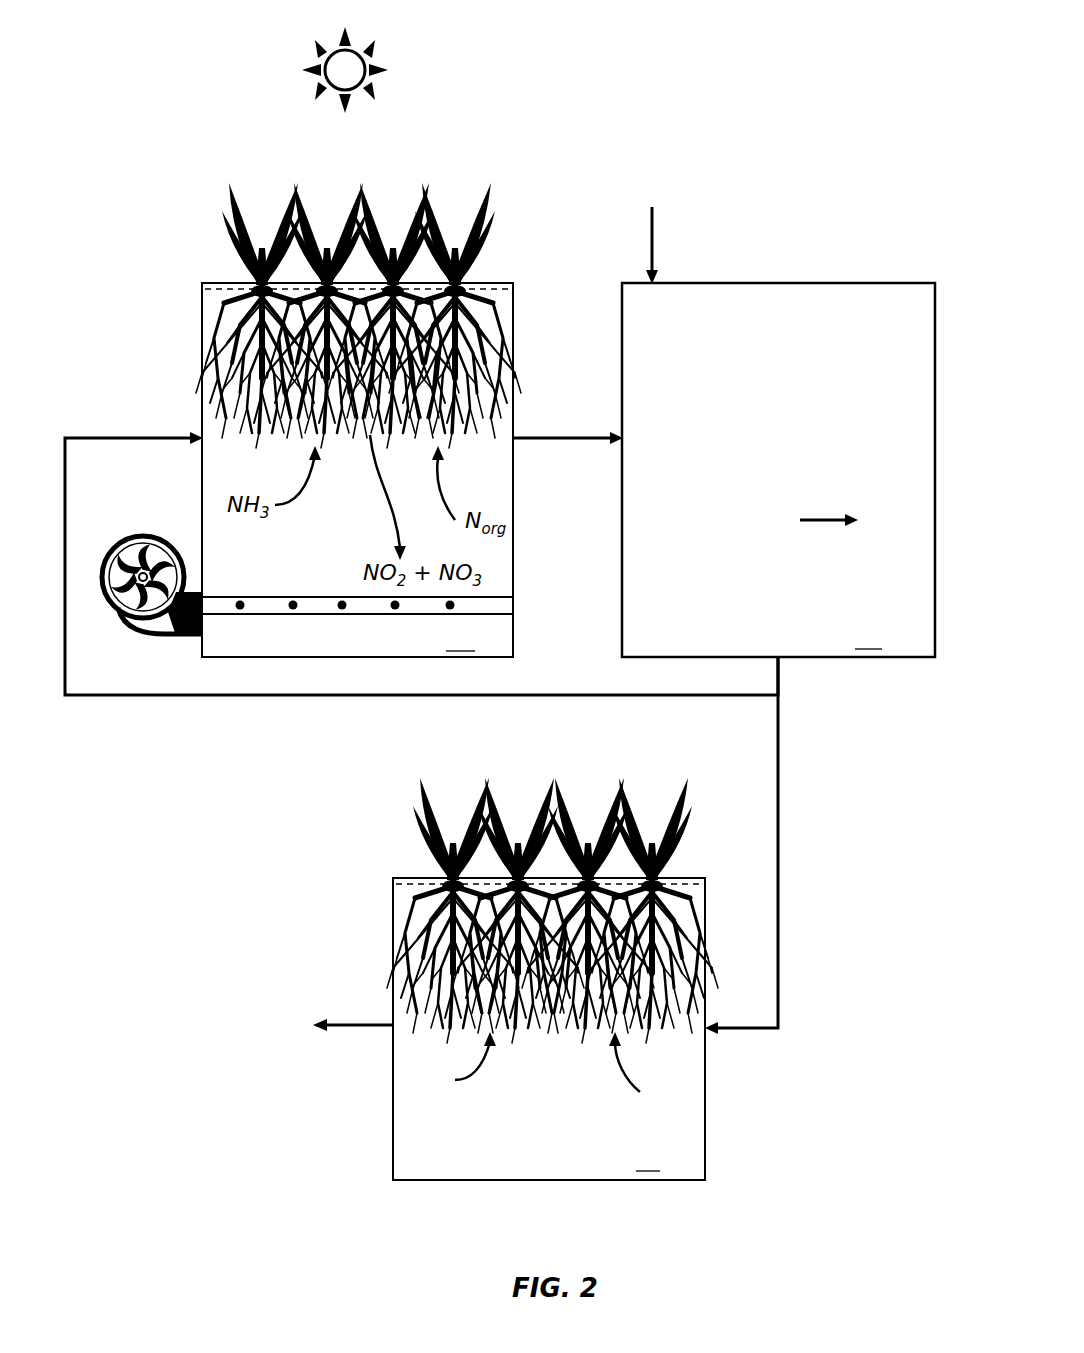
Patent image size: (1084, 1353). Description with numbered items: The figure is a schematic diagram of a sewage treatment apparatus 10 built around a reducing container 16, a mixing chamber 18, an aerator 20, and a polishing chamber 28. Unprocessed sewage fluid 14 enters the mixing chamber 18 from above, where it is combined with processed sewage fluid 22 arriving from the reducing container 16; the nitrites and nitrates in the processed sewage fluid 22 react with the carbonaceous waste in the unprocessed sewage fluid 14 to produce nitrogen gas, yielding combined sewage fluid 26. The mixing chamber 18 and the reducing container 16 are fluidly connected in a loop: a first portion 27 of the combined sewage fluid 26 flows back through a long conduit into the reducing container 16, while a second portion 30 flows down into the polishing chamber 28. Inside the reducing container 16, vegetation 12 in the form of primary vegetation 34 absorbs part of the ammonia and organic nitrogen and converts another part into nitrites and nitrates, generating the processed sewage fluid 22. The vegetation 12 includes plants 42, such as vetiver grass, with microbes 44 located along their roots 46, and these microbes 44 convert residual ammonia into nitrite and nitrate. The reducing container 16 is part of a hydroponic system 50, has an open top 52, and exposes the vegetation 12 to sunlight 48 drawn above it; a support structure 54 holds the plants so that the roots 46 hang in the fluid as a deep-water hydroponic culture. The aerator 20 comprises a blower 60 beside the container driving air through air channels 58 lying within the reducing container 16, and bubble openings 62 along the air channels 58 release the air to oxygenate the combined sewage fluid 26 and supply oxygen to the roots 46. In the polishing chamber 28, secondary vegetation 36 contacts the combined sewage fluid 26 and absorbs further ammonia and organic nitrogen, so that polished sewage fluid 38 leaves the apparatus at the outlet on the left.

The sewage treatment apparatus 10 is at (168, 37).
The vegetation 12 is at (376, 297).
The unprocessed sewage fluid 14 is at (652, 218).
The reducing container 16 is at (357, 470).
The mixing chamber 18 is at (778, 470).
The aerator 20 is at (118, 545).
The processed sewage fluid 22 is at (553, 433).
The combined sewage fluid 26 is at (778, 663).
The first portion of the combined sewage fluid 27 is at (713, 696).
The polishing chamber 28 is at (549, 1029).
The second portion of the combined sewage fluid 30 is at (778, 790).
The primary vegetation 34 is at (253, 265).
The secondary vegetation 36 is at (448, 865).
The polished sewage fluid 38 is at (343, 1025).
The plants 42 is at (452, 245).
The microbes 44 is at (500, 365).
The roots 46 is at (213, 355).
The sunlight 48 is at (372, 58).
The hydroponic system 50 is at (522, 280).
The open top 52 is at (505, 283).
The support structure 54 is at (200, 290).
The air channels 58 is at (513, 603).
The blower 60 is at (160, 535).
The bubble openings 62 is at (296, 600).